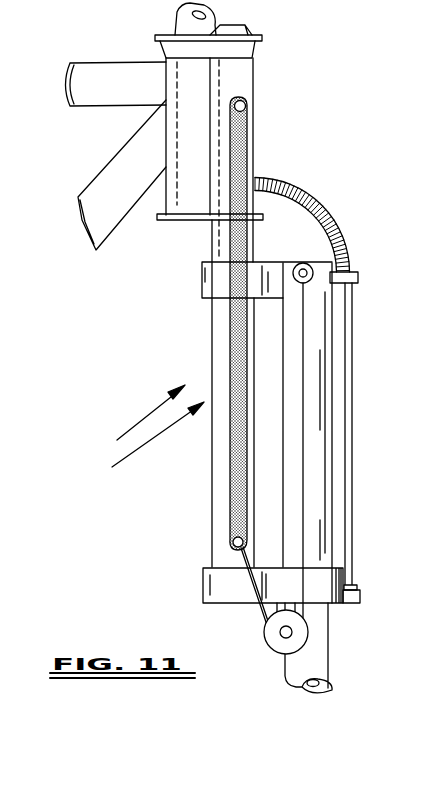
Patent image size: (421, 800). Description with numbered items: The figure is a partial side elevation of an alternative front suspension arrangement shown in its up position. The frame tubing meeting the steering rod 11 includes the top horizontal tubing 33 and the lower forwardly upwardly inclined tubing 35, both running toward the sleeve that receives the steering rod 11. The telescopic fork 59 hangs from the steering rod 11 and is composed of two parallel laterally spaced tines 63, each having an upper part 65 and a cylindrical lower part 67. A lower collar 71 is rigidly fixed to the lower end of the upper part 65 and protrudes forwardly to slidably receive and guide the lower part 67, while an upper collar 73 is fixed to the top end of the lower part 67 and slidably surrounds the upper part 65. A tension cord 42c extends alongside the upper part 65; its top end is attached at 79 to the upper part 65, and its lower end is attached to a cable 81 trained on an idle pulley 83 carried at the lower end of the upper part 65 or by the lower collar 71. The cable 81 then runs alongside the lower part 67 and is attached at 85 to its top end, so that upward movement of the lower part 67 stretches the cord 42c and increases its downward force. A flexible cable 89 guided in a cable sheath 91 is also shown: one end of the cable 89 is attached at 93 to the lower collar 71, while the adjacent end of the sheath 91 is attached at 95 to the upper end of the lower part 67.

The steering rod 11 is at (178, 27).
The top horizontal tubing 33 is at (133, 98).
The lower forwardly upwardly inclined tubing 35 is at (140, 188).
The attachment point of tension cord top end 79 is at (246, 106).
The tension cord 42c is at (259, 321).
The cable sheath 91 is at (327, 204).
The attachment point of cable to lower part 85 is at (312, 265).
The attachment point of cable sheath 95 is at (355, 276).
The flexible cable 89 is at (353, 312).
The upper collar 73 is at (220, 274).
The upper part 65 is at (217, 341).
The lower part 67 is at (291, 402).
The telescopic fork 59 is at (133, 420).
The tine 63 is at (143, 442).
The cable 81 is at (262, 613).
The idle pulley 83 is at (266, 630).
The lower collar 71 is at (313, 593).
The attachment point of flexible cable 93 is at (362, 595).